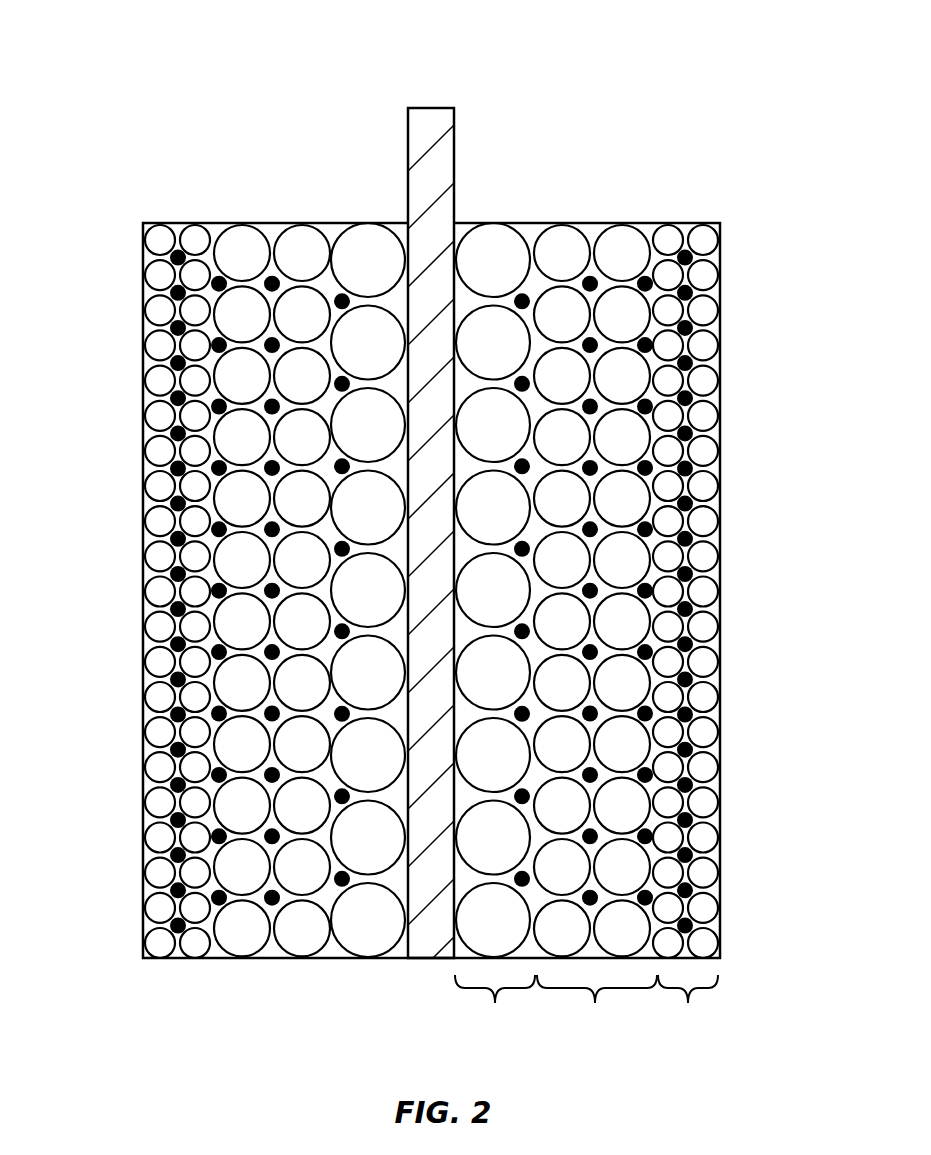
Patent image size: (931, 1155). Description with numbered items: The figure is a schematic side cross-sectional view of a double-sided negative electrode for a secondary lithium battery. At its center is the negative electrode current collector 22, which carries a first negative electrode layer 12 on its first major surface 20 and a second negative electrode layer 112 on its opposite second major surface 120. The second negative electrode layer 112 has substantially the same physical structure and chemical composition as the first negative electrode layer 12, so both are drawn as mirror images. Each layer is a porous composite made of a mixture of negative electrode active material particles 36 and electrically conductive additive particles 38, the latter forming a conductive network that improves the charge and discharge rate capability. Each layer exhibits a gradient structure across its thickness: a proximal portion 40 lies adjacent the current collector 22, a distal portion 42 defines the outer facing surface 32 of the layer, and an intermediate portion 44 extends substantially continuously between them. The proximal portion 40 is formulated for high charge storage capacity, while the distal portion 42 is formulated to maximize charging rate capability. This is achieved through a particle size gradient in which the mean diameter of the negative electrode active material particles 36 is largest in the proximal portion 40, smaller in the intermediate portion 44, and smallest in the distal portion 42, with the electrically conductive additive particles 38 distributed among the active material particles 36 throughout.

The negative electrode layer 12 is at (648, 220).
The negative electrode current collector 22 is at (432, 107).
The second negative electrode layer 112 is at (247, 221).
The second major surface 120 is at (372, 298).
The first major surface 20 is at (505, 298).
The negative electrode active material particles 36 is at (143, 310).
The facing surface 32 is at (722, 363).
The electrically conductive additive particles 38 is at (175, 642).
The proximal portion 40 is at (495, 1009).
The intermediate portion 44 is at (597, 1009).
The distal portion 42 is at (688, 1009).